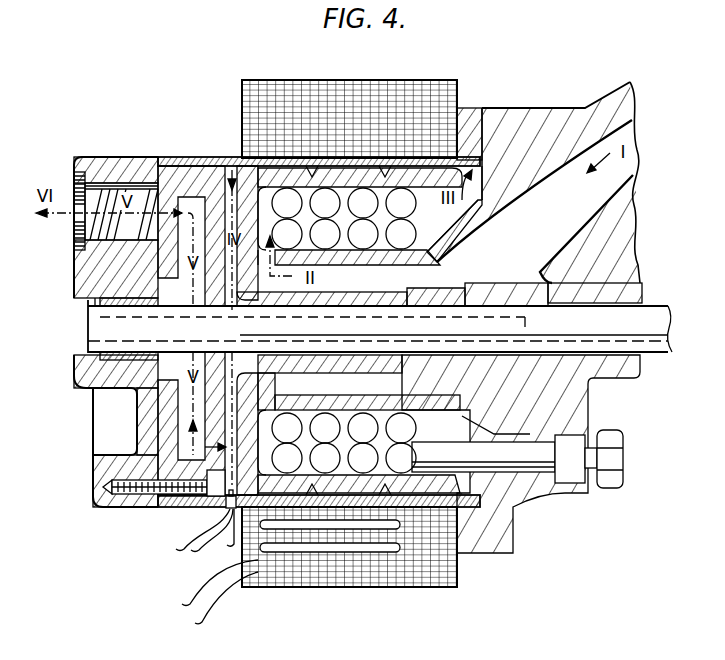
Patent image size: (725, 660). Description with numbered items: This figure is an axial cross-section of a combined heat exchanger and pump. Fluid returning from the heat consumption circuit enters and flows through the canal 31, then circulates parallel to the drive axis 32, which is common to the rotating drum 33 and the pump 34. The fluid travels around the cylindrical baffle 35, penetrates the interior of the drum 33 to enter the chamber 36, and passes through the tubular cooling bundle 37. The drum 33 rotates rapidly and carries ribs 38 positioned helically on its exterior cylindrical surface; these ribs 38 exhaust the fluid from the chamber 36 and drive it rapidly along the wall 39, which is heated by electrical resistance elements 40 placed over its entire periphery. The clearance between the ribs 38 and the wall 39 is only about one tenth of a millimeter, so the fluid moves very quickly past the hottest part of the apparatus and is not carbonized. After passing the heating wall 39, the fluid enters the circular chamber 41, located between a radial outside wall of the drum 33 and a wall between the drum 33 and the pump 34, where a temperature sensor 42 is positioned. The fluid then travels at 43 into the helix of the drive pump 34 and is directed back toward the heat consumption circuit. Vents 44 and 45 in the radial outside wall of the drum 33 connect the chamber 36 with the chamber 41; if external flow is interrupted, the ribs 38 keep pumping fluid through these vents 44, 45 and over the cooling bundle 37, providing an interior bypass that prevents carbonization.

The canal 31 is at (583, 190).
The drive axis 32 is at (653, 340).
The rotating drum 33 is at (445, 165).
The pump 34 is at (182, 198).
The cylindrical baffle 35 is at (327, 267).
The chamber 36 is at (432, 200).
The tubular cooling bundle 37 is at (342, 200).
The ribs 38 is at (312, 170).
The wall 39 is at (390, 168).
The electrical resistance elements 40 is at (377, 563).
The circular chamber 41 is at (220, 398).
The temperature sensor 42 is at (218, 508).
The passage to pump helix 43 is at (188, 448).
The vent 44 is at (263, 416).
The vent 45 is at (235, 213).